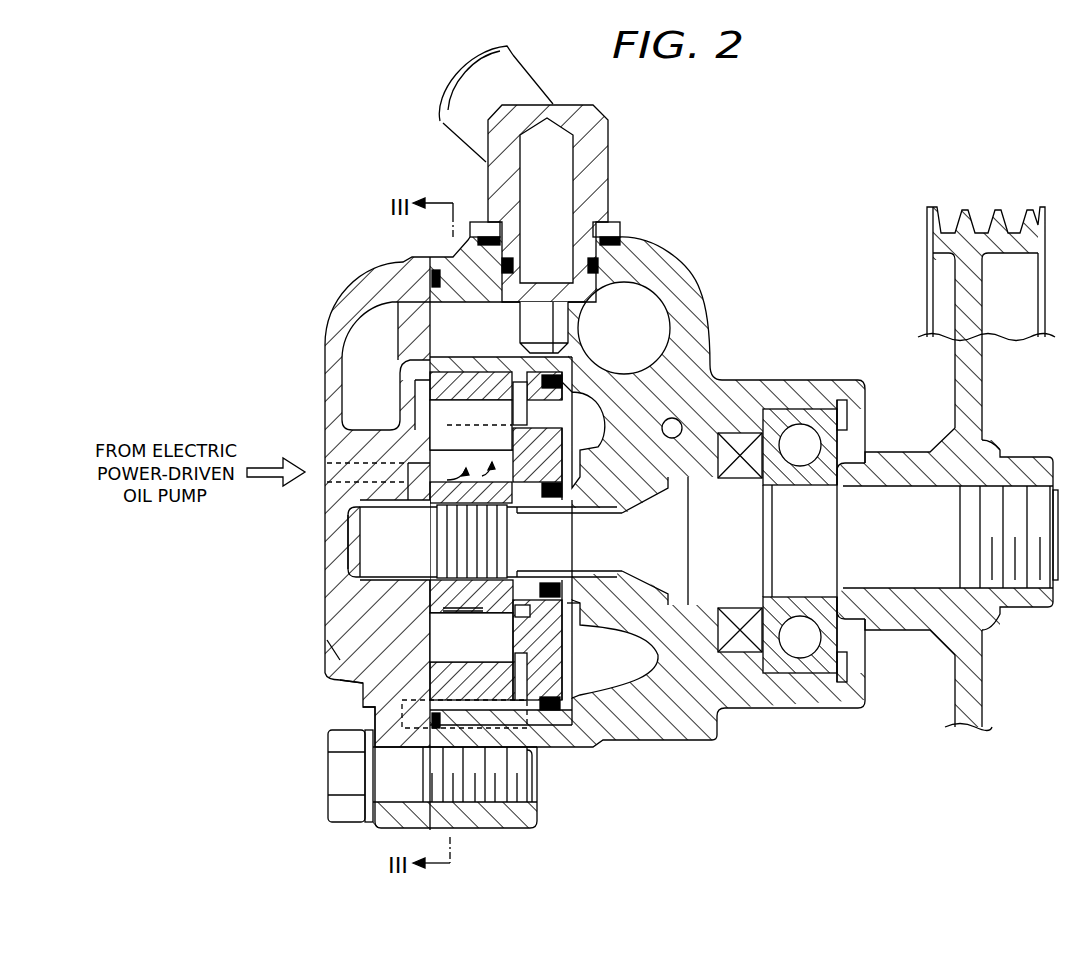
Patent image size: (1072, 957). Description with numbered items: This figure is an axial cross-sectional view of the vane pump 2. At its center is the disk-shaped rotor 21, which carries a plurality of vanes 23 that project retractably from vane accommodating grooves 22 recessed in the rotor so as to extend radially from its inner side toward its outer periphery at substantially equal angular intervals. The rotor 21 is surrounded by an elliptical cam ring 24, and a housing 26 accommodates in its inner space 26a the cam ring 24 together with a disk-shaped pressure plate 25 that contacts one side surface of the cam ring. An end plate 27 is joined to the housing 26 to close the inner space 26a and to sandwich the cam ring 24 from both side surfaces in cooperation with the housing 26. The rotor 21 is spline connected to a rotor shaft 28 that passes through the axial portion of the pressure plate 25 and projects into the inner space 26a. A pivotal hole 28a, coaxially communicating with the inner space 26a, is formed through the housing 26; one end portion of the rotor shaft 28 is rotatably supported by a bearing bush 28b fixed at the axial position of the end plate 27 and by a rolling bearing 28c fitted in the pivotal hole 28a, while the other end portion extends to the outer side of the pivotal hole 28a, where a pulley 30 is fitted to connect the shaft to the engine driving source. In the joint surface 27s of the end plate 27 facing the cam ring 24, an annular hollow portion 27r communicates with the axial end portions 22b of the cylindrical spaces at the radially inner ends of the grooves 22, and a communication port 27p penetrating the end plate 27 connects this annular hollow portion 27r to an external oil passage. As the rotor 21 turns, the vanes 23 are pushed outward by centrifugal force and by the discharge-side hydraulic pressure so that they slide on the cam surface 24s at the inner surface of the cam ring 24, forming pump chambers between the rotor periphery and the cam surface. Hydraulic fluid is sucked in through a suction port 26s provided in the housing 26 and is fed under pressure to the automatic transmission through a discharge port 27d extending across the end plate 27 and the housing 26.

The vane pump 2 is at (787, 246).
The rotor 21 is at (421, 516).
The vane accommodating grooves 22 is at (393, 536).
The axial end portions 22b is at (327, 514).
The vanes 23 is at (447, 433).
The cam ring 24 is at (375, 707).
The cam surface 24s is at (450, 372).
The pressure plate 25 is at (566, 660).
The housing 26 is at (620, 438).
The inner space 26a is at (513, 735).
The suction port 26s is at (662, 282).
The end plate 27 is at (371, 492).
The discharge port 27d is at (383, 307).
The communication port 27p is at (324, 503).
The annular hollow portion 27r is at (325, 657).
The joint surface 27s is at (363, 682).
The rotor shaft 28 is at (667, 516).
The pivotal hole 28a is at (863, 660).
The bearing bush 28b is at (387, 580).
The rolling bearing 28c is at (813, 410).
The pulley 30 is at (1040, 233).